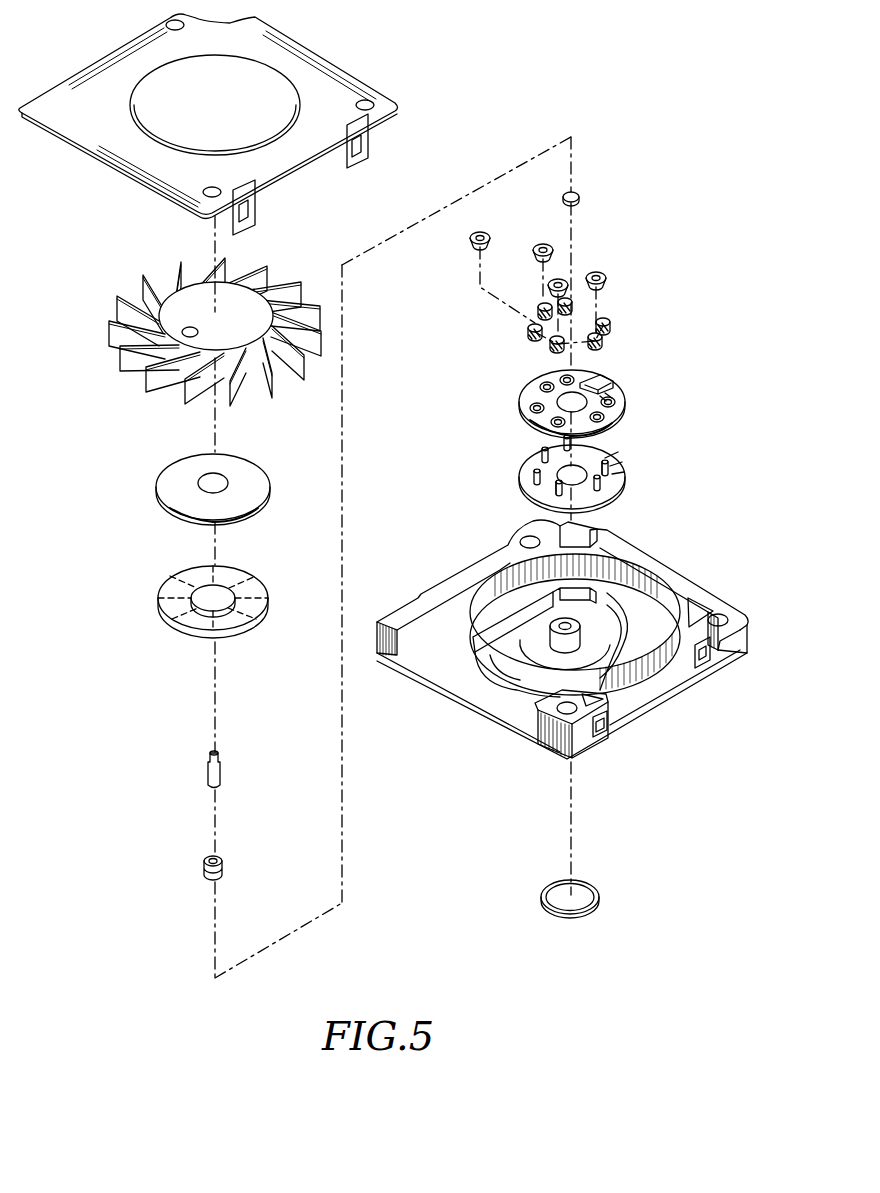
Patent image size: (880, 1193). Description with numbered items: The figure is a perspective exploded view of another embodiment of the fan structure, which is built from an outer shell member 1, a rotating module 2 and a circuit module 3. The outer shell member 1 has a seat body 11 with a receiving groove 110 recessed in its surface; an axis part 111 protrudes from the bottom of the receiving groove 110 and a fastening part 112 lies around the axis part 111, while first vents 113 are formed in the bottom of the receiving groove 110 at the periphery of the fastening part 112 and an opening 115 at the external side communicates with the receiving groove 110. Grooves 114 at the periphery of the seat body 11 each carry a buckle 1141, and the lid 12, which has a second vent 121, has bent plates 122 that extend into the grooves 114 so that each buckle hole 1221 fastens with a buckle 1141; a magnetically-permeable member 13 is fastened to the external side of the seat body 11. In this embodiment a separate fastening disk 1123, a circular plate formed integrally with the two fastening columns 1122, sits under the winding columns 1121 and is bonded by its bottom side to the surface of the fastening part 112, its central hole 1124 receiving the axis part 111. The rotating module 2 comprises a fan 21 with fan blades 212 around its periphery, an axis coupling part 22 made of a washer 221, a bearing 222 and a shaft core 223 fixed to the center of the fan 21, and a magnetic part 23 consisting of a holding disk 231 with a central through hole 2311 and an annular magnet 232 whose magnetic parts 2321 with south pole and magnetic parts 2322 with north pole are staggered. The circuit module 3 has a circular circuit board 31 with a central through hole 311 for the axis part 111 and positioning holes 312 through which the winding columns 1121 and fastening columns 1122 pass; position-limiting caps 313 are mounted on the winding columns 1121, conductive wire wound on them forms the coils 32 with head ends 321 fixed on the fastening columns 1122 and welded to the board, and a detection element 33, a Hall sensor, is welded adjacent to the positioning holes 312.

The outer shell member 1 is at (559, 618).
The seat body 11 is at (559, 664).
The receiving groove 110 is at (638, 580).
The axis part 111 is at (577, 647).
The fastening part 112 is at (545, 663).
The winding columns 1121 is at (534, 477).
The fastening columns 1122 is at (610, 471).
The fastening disk 1123 is at (545, 495).
The hole 1124 is at (580, 466).
The first vents 113 is at (533, 597).
The grooves 114 is at (646, 722).
The buckle 1141 is at (644, 727).
The opening 115 is at (390, 652).
The lid 12 is at (229, 124).
The second vent 121 is at (183, 62).
The plates 122 is at (336, 174).
The buckle hole 1221 is at (360, 152).
The magnetically-permeable member 13 is at (598, 886).
The rotating module 2 is at (194, 313).
The fan 21 is at (194, 332).
The fan blades 212 is at (135, 372).
The axis coupling part 22 is at (132, 823).
The washer 221 is at (580, 196).
The bearing 222 is at (203, 873).
The shaft core 223 is at (208, 768).
The magnetic part 23 is at (150, 554).
The holding disk 231 is at (186, 486).
The through hole 2311 is at (210, 480).
The annular magnet 232 is at (168, 614).
The magnetic parts with south magnetic pole 2321 is at (160, 619).
The magnetic parts with north magnetic pole 2322 is at (165, 583).
The circuit module 3 is at (552, 335).
The circuit board 31 is at (559, 387).
The through hole 311 is at (571, 392).
The positioning holes 312 is at (530, 408).
The position-limiting caps 313 is at (606, 278).
The coils 32 is at (582, 292).
The head ends 321 is at (615, 324).
The detection element 33 is at (605, 381).